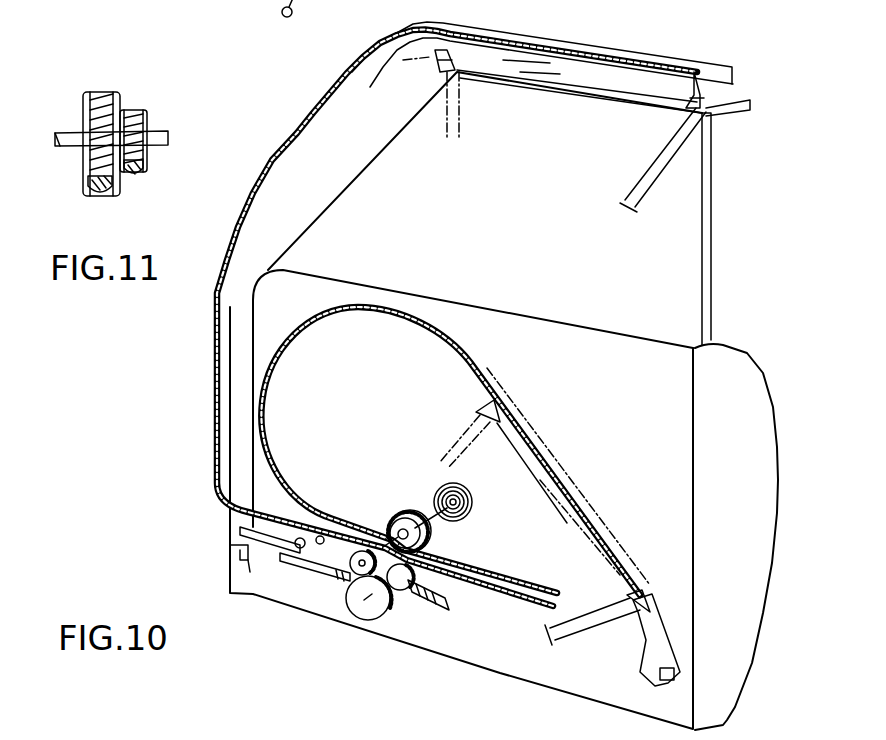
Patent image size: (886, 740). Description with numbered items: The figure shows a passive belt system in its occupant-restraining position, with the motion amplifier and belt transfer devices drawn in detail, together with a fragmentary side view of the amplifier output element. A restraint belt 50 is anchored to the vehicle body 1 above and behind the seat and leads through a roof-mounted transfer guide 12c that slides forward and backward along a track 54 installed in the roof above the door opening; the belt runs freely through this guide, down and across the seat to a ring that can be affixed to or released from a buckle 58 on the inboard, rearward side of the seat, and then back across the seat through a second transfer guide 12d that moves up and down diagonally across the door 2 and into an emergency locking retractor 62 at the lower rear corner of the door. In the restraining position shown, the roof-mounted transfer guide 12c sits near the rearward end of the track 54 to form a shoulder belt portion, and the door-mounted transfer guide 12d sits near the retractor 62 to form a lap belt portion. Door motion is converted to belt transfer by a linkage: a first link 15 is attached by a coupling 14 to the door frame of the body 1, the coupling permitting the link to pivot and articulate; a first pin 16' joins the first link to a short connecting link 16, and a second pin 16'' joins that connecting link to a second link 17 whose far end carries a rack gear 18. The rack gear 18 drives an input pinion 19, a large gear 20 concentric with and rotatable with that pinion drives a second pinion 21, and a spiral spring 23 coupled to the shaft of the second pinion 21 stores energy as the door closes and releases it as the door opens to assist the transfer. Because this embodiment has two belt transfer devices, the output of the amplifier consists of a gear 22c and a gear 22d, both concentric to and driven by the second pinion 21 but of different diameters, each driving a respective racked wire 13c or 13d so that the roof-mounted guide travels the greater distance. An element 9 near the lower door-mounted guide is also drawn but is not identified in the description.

In FIG. 10, the body 1 is at (194, 478).
In FIG. 10, the door 2 is at (747, 402).
In FIG. 10, the guide arm 9 is at (572, 632).
In FIG. 10, the transfer guide 12c is at (690, 108).
In FIG. 10, the second transfer guide 12d is at (478, 405).
In FIG. 11, the racked wire 13c is at (95, 198).
In FIG. 10, the racked wire 13c is at (302, 143).
In FIG. 11, the racked wire 13d is at (136, 178).
In FIG. 10, the racked wire 13d is at (360, 313).
In FIG. 10, the coupling 14 is at (236, 545).
In FIG. 10, the first link 15 is at (240, 532).
In FIG. 10, the connecting link 16 is at (279, 515).
In FIG. 10, the first pin 16' is at (334, 508).
In FIG. 10, the second pin 16'' is at (221, 599).
In FIG. 10, the second link 17 is at (300, 570).
In FIG. 10, the rack gear 18 is at (447, 608).
In FIG. 10, the input pinion 19 is at (427, 578).
In FIG. 10, the large gear 20 is at (378, 620).
In FIG. 10, the second pinion 21 is at (350, 560).
In FIG. 11, the gear 22c is at (88, 100).
In FIG. 10, the gear 22c is at (432, 537).
In FIG. 11, the gear 22d is at (140, 118).
In FIG. 10, the gear 22d is at (386, 528).
In FIG. 10, the spiral spring 23 is at (460, 496).
In FIG. 10, the restraint belt 50 is at (640, 198).
In FIG. 10, the track 54 is at (632, 20).
In FIG. 10, the buckle 58 is at (280, 10).
In FIG. 10, the emergency locking retractor 62 is at (672, 646).